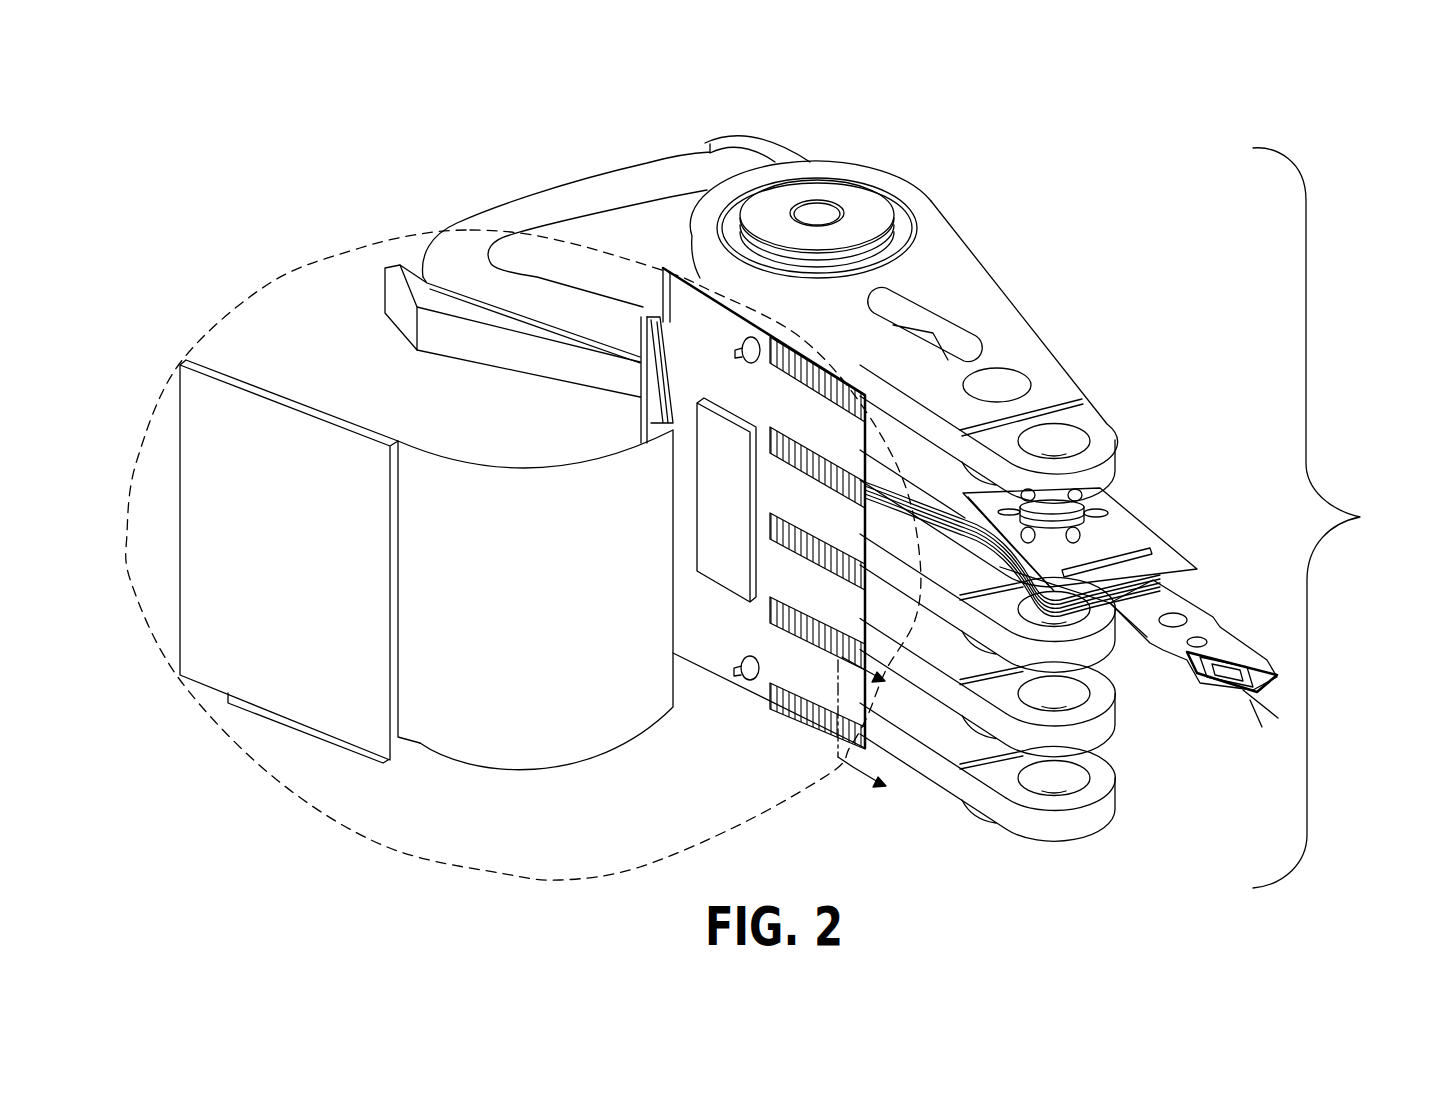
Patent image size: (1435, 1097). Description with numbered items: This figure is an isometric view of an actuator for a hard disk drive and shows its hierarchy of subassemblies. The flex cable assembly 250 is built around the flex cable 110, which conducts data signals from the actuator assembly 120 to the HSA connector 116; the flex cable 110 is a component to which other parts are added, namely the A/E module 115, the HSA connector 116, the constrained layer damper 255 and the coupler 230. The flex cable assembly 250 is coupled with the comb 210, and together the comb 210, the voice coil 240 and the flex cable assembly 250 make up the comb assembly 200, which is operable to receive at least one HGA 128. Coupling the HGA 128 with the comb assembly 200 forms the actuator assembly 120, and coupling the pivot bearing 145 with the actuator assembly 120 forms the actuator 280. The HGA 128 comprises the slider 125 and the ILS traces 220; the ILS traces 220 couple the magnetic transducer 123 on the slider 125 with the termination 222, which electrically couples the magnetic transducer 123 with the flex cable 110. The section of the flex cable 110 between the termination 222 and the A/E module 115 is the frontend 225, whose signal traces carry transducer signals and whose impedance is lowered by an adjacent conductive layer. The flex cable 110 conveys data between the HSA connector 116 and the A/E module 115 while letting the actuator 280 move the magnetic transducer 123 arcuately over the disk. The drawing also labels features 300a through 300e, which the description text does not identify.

The flex cable 110 is at (479, 591).
The A/E module 115 is at (748, 514).
The HSA connector 116 is at (301, 591).
The actuator assembly 120 is at (1332, 518).
The magnetic transducer 123 is at (1243, 700).
The slider 125 is at (1240, 670).
The HGA 128 is at (1163, 573).
The pivot bearing 145 is at (777, 208).
The comb assembly 200 is at (827, 103).
The comb 210 is at (963, 277).
The integrated lead suspension (ILS) traces 220 is at (1210, 660).
The termination 222 is at (657, 318).
The frontend 225 is at (763, 640).
The coupler 230 is at (418, 221).
The voice coil 240 is at (628, 205).
The flex cable assembly 250 is at (262, 280).
The constrained layer damper (CLD) 255 is at (655, 408).
The actuator 280 is at (1137, 645).
The connector 300a is at (866, 614).
The connector 300e is at (817, 716).